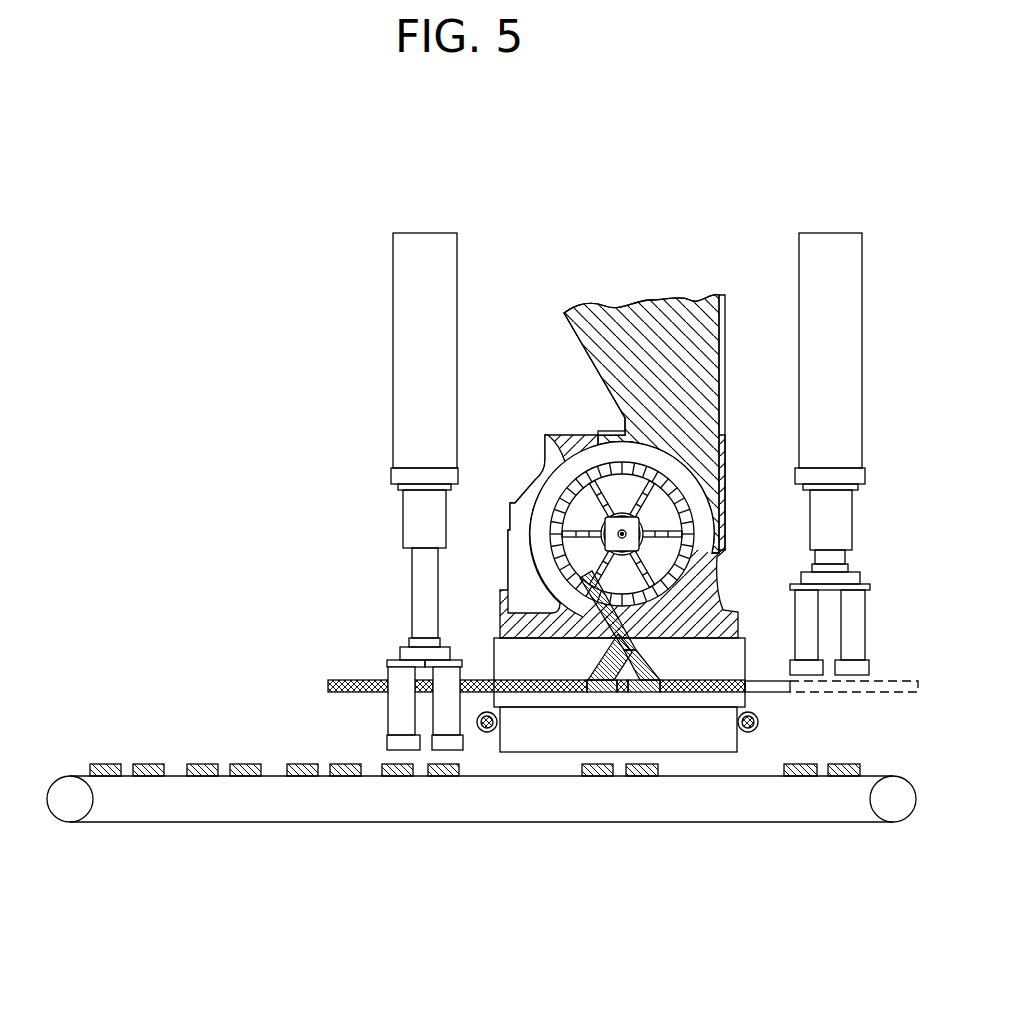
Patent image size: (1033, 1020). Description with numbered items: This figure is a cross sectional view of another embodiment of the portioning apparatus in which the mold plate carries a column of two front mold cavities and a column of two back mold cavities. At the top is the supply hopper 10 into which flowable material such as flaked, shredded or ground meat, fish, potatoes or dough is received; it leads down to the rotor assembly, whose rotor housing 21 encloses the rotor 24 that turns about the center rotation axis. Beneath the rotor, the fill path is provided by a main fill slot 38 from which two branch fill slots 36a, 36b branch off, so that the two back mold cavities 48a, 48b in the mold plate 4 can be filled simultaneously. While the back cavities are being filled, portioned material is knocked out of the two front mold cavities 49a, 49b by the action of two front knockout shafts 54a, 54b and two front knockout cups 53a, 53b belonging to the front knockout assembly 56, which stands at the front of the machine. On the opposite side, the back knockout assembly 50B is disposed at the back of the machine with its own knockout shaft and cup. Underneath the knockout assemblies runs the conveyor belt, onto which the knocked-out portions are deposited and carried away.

The substrate 4 is at (337, 678).
The supply hopper 10 is at (590, 338).
The rotor housing 21 is at (530, 492).
The rotor 24 is at (582, 557).
The branch fill slot 36a is at (608, 664).
The branch fill slot 36b is at (645, 665).
The main fill slot 38 is at (638, 655).
The back mold cavity 48a is at (600, 692).
The back mold cavity 48b is at (647, 692).
The front mold cavity 49a is at (383, 693).
The front mold cavity 49b is at (465, 697).
The back knockout assembly 50B is at (760, 268).
The front knockout cup 53a is at (387, 740).
The front knockout cup 53b is at (465, 740).
The front knockout shaft 54a is at (383, 672).
The front knockout shaft 54b is at (468, 665).
The front knockout assembly 56 is at (375, 387).